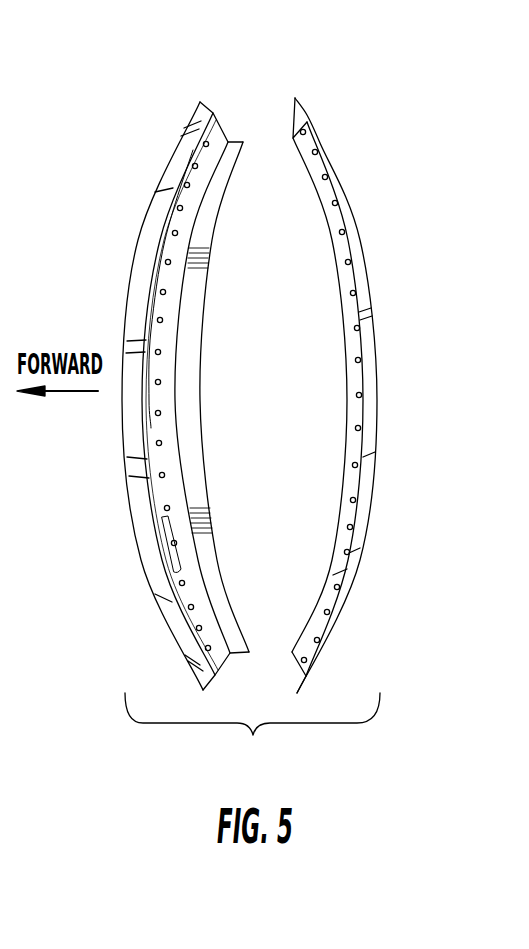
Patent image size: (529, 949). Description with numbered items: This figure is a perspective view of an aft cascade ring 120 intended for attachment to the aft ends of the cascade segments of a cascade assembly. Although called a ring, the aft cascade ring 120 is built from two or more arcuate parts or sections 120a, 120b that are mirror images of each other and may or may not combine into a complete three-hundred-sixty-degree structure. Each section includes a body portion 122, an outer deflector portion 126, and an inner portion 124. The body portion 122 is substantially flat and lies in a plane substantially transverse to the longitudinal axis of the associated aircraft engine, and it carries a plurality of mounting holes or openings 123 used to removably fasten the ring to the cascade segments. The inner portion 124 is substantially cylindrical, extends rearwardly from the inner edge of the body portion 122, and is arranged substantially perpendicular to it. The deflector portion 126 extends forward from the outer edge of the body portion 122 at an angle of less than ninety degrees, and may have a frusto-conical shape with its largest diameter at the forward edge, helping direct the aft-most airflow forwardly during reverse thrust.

The aft cascade ring 120 is at (350, 78).
The arcuate section 120a is at (140, 242).
The arcuate section 120b is at (370, 503).
The body portion 122 is at (157, 497).
The mounting holes 123 is at (245, 143).
The inner portion 124 is at (188, 439).
The deflector portion 126 is at (178, 148).